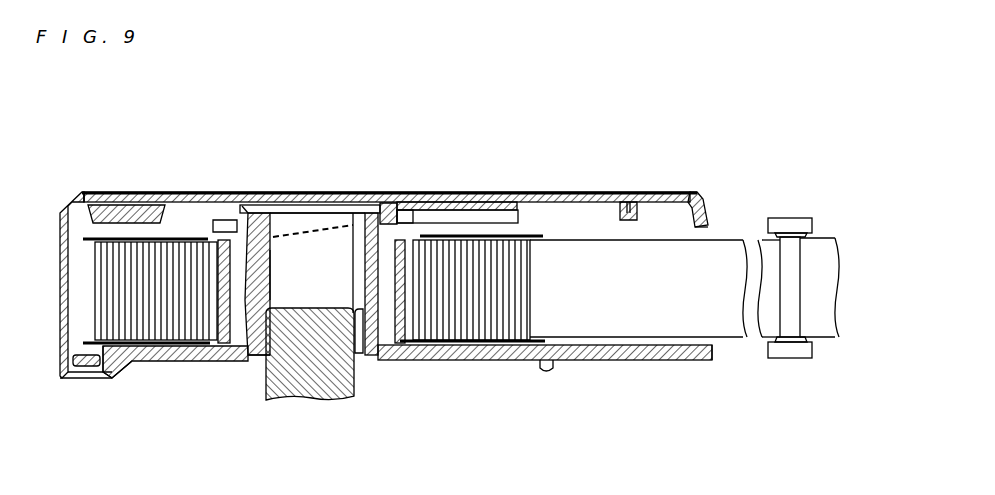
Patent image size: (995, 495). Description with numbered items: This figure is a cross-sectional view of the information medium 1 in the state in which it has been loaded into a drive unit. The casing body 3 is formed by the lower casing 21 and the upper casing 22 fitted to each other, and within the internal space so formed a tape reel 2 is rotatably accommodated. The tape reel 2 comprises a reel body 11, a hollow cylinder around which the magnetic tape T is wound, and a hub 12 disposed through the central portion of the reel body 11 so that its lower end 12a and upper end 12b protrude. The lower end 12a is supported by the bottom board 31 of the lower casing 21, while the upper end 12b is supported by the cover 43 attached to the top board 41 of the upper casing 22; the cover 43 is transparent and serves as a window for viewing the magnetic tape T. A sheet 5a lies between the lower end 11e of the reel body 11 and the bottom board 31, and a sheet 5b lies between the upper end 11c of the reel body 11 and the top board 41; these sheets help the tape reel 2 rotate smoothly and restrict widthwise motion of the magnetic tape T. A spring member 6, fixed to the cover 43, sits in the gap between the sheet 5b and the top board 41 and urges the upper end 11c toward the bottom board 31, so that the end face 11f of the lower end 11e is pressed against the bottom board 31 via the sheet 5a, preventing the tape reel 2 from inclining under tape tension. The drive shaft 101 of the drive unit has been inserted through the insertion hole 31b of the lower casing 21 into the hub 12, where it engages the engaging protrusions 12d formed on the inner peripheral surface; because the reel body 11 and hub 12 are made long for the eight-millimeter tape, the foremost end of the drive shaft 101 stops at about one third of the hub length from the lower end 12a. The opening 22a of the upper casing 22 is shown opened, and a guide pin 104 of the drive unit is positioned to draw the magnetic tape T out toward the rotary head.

The information medium 1 is at (558, 150).
The tape reel 2 is at (280, 264).
The casing body 3 is at (642, 176).
The sheet 5a is at (480, 362).
The sheet 5b is at (452, 233).
The spring member 6 is at (224, 193).
The reel body 11 is at (217, 270).
The upper end of reel body 11c is at (230, 285).
The lower end of reel body 11e is at (220, 333).
The end face of lower end 11f is at (225, 340).
The hub 12 is at (310, 195).
The lower end of hub 12a is at (255, 366).
The upper end of hub 12b is at (253, 195).
The engaging protrusion 12d is at (276, 294).
The lower casing 21 is at (709, 380).
The upper casing 22 is at (697, 182).
The opening 22a is at (716, 232).
The bottom board 31 is at (515, 362).
The insertion hole 31b is at (362, 368).
The top board 41 is at (497, 193).
The cover 43 is at (361, 195).
The drive shaft 101 is at (333, 403).
The guide pin 104 is at (810, 220).
The magnetic tape T is at (633, 327).